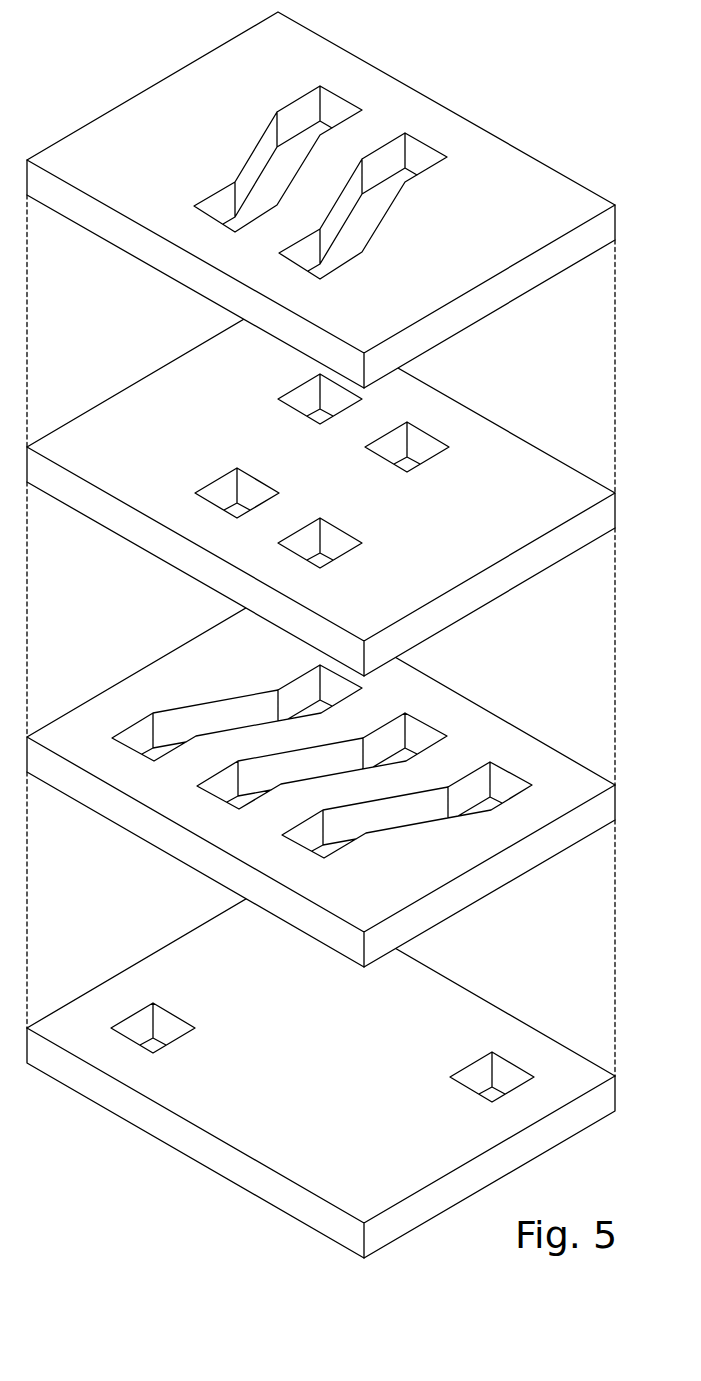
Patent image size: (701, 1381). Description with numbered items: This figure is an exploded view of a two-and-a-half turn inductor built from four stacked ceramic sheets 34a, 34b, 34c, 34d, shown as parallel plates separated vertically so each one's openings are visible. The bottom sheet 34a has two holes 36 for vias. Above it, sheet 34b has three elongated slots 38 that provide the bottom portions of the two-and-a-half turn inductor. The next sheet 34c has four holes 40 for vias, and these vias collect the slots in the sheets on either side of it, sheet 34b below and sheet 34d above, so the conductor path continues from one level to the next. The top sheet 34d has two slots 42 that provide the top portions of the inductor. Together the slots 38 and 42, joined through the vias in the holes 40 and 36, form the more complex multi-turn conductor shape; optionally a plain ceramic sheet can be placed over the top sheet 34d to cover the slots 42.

The bottom ceramic sheet 34a is at (110, 1098).
The ceramic sheet 34b is at (113, 802).
The ceramic sheet 34c is at (113, 510).
The top ceramic sheet 34d is at (110, 218).
The holes 36 is at (167, 1028).
The slots 38 is at (245, 717).
The holes 40 is at (303, 407).
The slots 42 is at (274, 177).